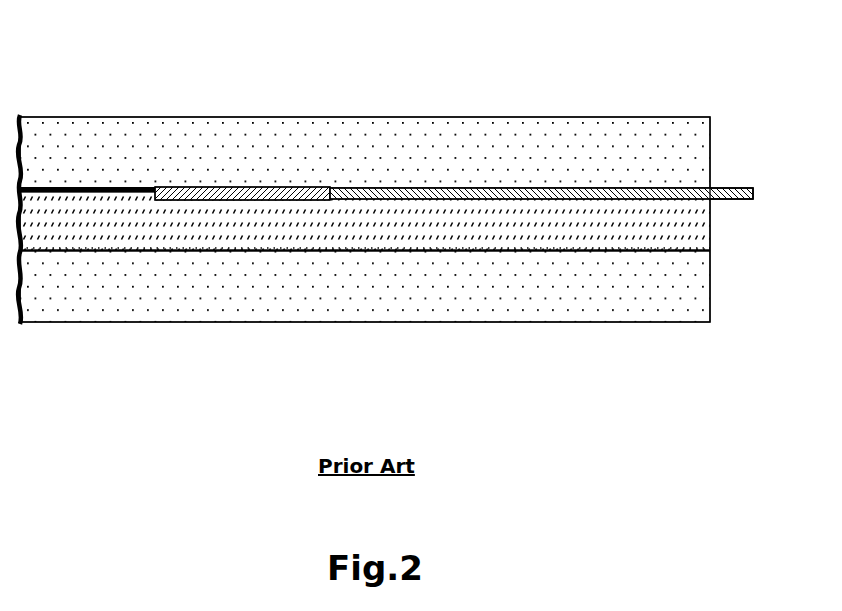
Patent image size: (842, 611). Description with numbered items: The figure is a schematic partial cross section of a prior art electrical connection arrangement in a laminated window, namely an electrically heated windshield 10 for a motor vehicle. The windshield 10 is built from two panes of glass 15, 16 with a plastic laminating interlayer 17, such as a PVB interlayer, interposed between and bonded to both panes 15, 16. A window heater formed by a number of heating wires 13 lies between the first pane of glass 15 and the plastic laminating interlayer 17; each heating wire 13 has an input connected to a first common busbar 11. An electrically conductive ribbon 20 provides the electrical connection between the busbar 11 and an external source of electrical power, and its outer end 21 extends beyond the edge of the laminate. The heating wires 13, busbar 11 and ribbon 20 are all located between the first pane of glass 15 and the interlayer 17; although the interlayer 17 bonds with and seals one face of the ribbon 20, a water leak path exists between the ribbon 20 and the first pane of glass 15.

The electrically heated windshield 10 is at (396, 219).
The first common busbar 11 is at (235, 202).
The heating wires 13 is at (97, 188).
The first pane of glass 15 is at (408, 117).
The second pane of glass 16 is at (400, 322).
The plastic laminating interlayer 17 is at (343, 253).
The electrically conductive ribbon 20 is at (548, 186).
The strip terminal end 21 is at (733, 187).